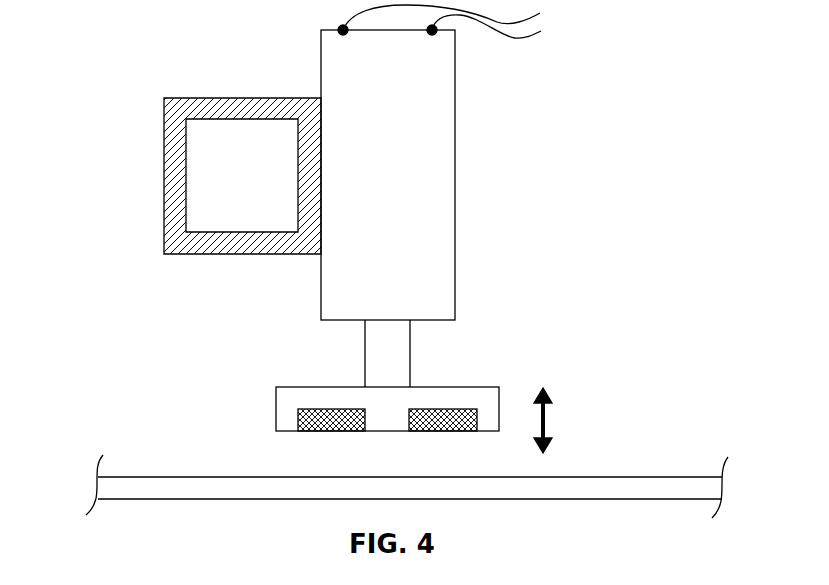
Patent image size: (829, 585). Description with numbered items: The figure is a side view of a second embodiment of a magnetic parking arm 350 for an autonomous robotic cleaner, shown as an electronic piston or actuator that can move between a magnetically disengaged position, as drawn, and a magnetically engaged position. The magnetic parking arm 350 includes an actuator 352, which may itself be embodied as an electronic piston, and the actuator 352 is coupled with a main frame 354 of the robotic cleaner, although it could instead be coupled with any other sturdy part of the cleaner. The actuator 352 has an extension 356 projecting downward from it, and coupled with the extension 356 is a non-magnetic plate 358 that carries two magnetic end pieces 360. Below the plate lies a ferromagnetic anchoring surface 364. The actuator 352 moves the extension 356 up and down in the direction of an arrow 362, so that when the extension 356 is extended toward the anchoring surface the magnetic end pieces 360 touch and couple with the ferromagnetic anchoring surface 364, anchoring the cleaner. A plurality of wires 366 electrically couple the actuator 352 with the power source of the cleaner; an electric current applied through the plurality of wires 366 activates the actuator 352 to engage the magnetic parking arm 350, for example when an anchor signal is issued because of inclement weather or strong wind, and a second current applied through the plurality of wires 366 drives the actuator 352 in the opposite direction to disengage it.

The magnetic parking arm 350 is at (130, 48).
The actuator 352 is at (388, 175).
The main frame 354 is at (176, 172).
The extension 356 is at (377, 352).
The non-magnetic plate 358 is at (439, 398).
The magnetic end pieces 360 is at (435, 431).
The arrow 362 is at (546, 416).
The ferromagnetic anchoring surface 364 is at (184, 490).
The plurality of wires 366 is at (497, 22).